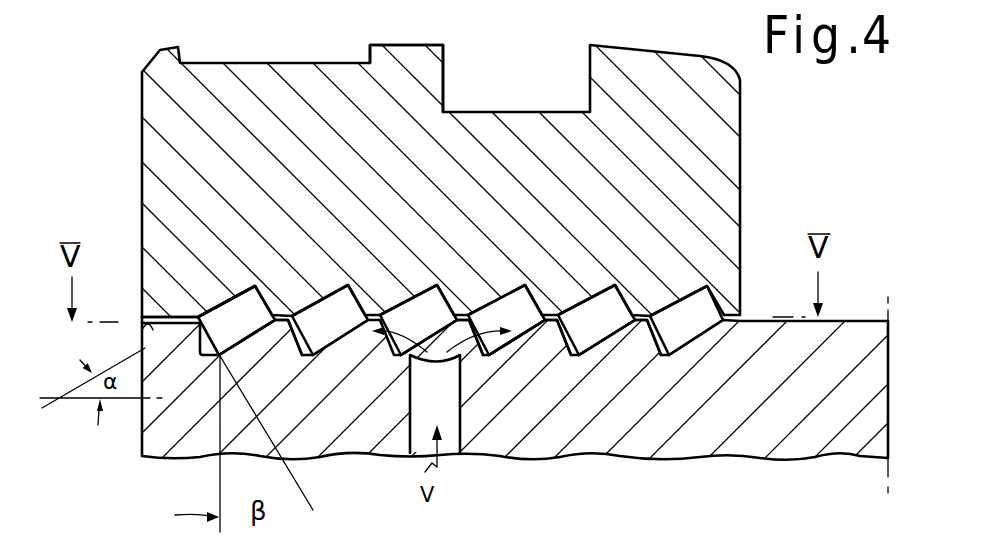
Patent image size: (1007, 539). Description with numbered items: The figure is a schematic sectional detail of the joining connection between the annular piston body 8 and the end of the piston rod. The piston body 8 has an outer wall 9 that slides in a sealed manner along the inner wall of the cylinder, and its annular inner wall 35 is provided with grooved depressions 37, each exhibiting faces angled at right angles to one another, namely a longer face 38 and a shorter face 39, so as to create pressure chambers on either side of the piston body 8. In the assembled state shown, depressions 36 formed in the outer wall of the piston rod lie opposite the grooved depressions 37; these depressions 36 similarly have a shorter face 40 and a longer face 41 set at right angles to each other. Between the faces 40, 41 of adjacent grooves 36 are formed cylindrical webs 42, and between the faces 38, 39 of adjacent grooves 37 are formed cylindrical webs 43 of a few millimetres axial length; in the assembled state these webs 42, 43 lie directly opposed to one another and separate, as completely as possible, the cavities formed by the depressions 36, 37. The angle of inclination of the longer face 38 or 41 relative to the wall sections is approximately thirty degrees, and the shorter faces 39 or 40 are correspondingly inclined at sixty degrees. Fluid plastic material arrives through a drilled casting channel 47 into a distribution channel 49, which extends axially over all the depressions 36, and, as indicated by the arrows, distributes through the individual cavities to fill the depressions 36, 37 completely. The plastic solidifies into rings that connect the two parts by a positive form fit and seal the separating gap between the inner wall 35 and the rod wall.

The piston body 8 is at (717, 177).
The outer wall 9 is at (407, 44).
The annular inner wall 35 is at (138, 330).
The depressions 36 is at (557, 372).
The grooved depressions 37 is at (697, 305).
The longer face 38 is at (220, 303).
The shorter face 39 is at (271, 298).
The shorter face 40 is at (222, 398).
The longer face 41 is at (350, 450).
The cylindrical webs 42 is at (625, 352).
The cylindrical webs 43 is at (647, 313).
The casting channel 47 is at (409, 413).
The distribution channel 49 is at (515, 375).